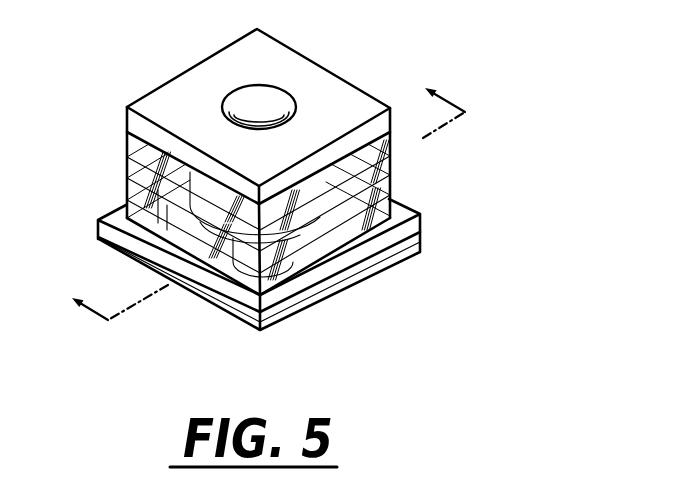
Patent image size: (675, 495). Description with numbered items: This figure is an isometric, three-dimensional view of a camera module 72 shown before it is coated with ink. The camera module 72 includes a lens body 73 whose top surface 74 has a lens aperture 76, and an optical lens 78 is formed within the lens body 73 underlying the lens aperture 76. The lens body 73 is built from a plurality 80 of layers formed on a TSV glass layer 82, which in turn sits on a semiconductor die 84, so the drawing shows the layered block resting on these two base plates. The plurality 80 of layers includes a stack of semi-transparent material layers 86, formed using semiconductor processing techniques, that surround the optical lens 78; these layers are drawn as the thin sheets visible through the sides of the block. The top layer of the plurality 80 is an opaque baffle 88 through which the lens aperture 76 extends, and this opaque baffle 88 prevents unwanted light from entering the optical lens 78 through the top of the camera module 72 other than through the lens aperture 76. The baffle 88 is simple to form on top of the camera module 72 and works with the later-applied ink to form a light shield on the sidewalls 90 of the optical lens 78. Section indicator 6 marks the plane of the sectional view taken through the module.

The section line 6- 6 is at (261, 194).
The camera module 72 is at (475, 126).
The lens body 73 is at (360, 230).
The top surface 74 is at (160, 110).
The lens aperture 76 is at (250, 98).
The optical lens 78 is at (260, 122).
The plurality of layers 80 is at (397, 101).
The TSV glass layer 82 is at (213, 292).
The semiconductor die 84 is at (248, 325).
The semi-transparent material layers 86 is at (127, 200).
The baffle 88 is at (127, 115).
The sidewalls 90 is at (143, 226).